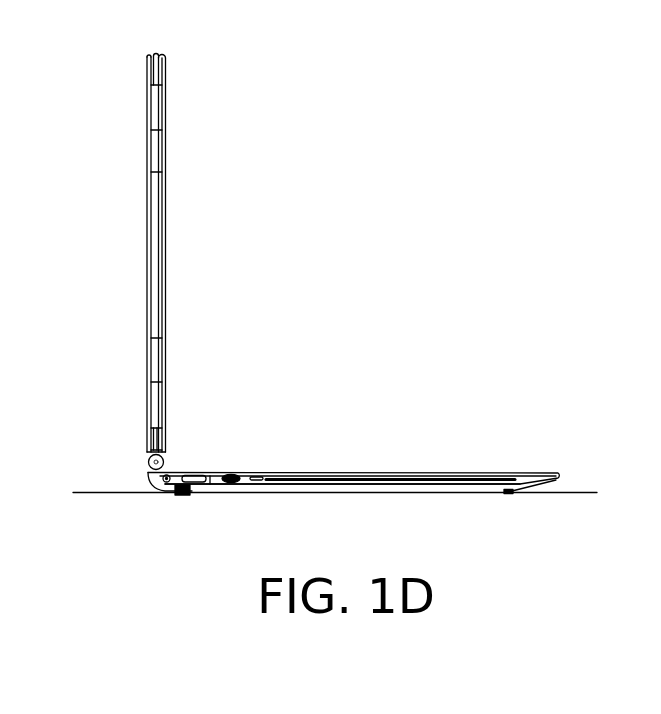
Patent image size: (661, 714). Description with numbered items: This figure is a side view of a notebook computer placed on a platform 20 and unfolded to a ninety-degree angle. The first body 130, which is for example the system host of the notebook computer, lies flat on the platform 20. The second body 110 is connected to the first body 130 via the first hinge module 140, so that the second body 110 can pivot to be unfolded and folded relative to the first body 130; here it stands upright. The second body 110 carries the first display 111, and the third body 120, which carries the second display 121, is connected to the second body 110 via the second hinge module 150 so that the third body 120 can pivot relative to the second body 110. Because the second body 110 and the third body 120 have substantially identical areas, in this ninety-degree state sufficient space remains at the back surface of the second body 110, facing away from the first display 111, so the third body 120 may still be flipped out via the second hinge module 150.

The platform 20 is at (100, 488).
The second body 110 is at (160, 56).
The first display 111 is at (172, 155).
The third body 120 is at (150, 56).
The second display 121 is at (142, 205).
The first body 130 is at (385, 478).
The first hinge module 140 is at (165, 462).
The second hinge module 150 is at (157, 287).